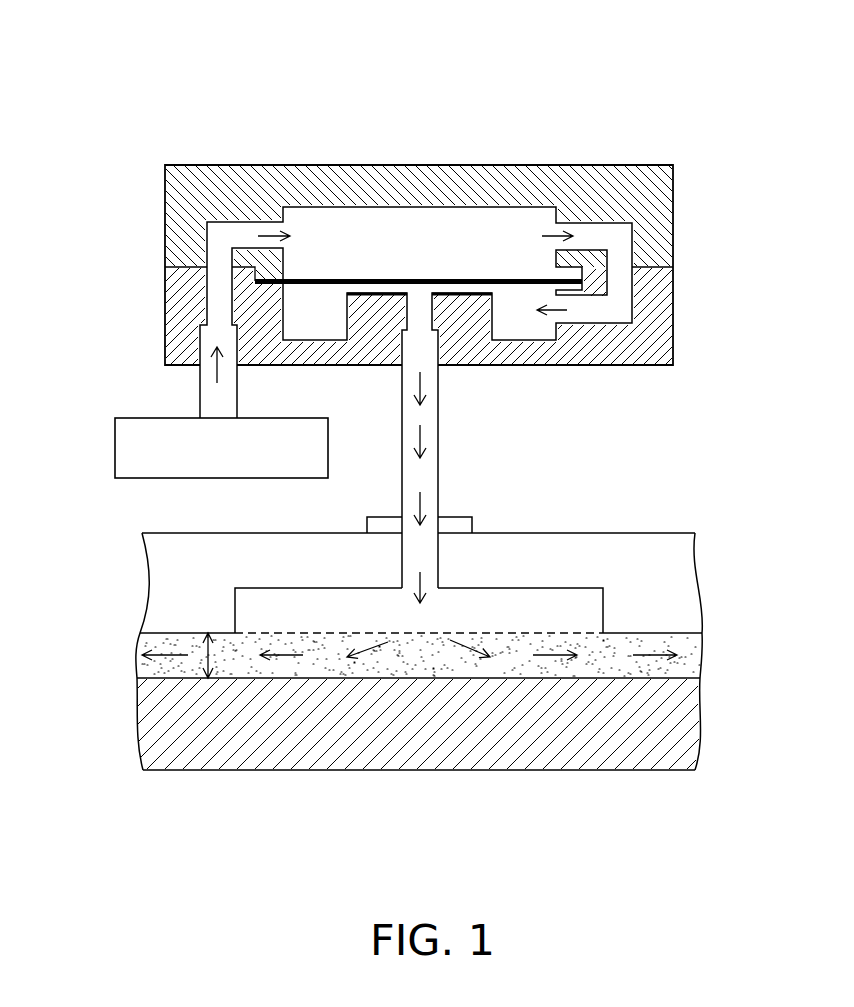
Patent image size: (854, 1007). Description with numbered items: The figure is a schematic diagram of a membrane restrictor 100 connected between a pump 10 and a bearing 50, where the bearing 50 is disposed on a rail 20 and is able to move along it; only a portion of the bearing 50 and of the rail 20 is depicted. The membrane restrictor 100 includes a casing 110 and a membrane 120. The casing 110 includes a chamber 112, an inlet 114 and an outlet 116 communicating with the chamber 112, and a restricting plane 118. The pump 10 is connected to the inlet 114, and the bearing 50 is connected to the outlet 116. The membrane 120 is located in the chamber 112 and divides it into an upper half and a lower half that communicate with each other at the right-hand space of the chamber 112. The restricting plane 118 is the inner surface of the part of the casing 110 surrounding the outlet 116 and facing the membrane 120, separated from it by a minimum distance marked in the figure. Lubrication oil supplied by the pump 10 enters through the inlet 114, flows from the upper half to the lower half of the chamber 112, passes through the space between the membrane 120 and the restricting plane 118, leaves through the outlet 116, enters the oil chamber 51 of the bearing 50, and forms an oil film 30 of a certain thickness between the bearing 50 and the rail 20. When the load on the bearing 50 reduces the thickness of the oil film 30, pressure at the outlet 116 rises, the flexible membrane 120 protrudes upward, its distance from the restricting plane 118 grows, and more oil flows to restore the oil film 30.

The membrane restrictor 100 is at (728, 88).
The casing 110 is at (573, 180).
The chamber 112 is at (437, 259).
The inlet 114 is at (210, 350).
The outlet 116 is at (428, 367).
The restricting plane 118 is at (377, 298).
The membrane 120 is at (330, 279).
The pump 10 is at (115, 450).
The bearing 50 is at (457, 619).
The oil chamber 51 is at (558, 602).
The oil film 30 is at (675, 668).
The rail 20 is at (675, 733).